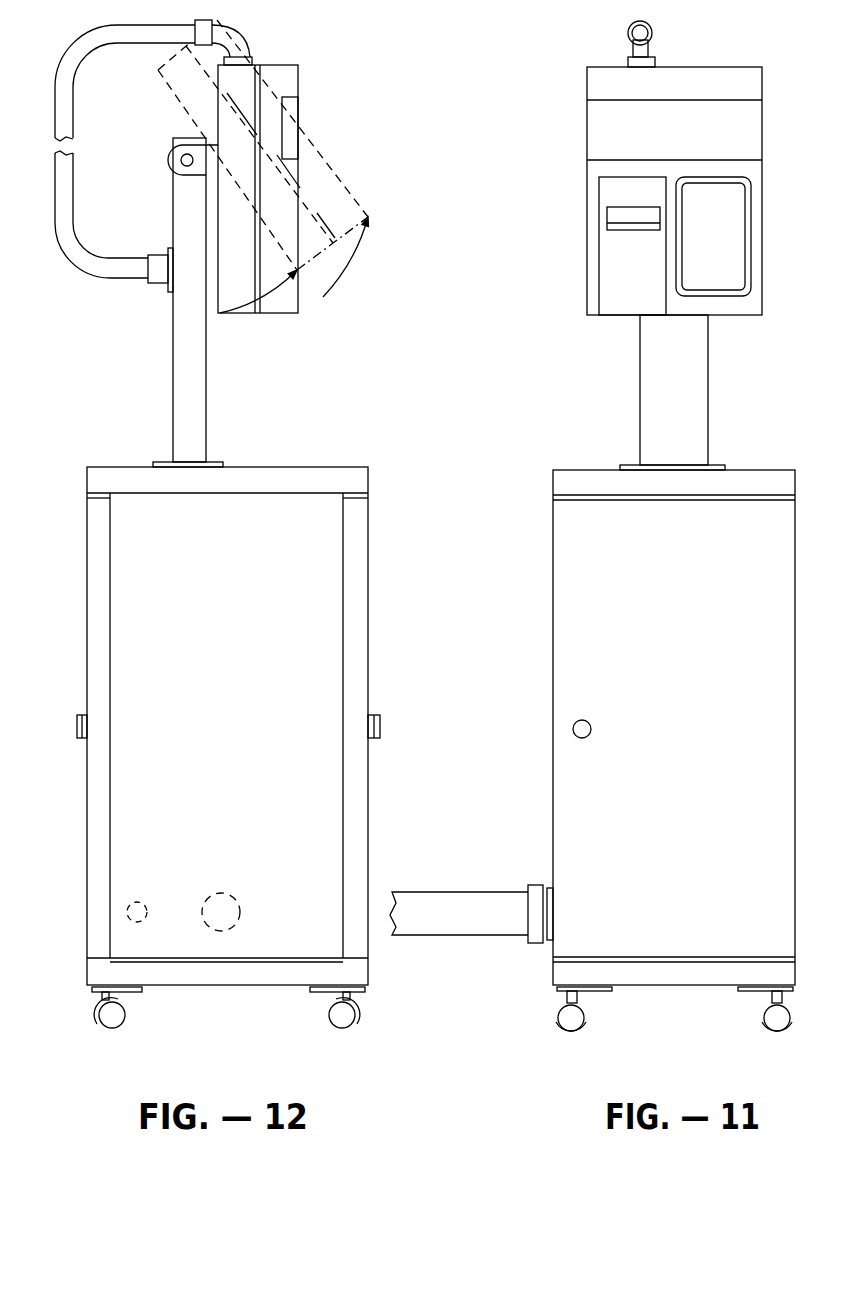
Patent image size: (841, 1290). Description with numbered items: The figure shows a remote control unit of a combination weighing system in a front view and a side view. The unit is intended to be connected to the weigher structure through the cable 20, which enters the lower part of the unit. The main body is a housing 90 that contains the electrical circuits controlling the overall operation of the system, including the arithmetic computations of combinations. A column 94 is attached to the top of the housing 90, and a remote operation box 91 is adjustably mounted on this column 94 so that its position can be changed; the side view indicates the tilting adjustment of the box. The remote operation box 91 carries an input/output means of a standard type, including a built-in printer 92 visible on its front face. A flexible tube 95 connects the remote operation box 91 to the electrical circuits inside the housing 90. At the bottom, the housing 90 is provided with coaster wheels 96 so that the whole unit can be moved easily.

In FIG. 11, the cable 20 is at (475, 897).
In FIG. 12, the housing 90 is at (358, 535).
In FIG. 11, the housing 90 is at (560, 627).
In FIG. 12, the remote operation box 91 is at (288, 75).
In FIG. 11, the remote operation box 91 is at (598, 140).
In FIG. 11, the built-in printer 92 is at (612, 257).
In FIG. 12, the column 94 is at (197, 371).
In FIG. 11, the column 94 is at (652, 388).
In FIG. 12, the flexible tube 95 is at (96, 263).
In FIG. 12, the coaster wheels 96 is at (117, 1013).
In FIG. 11, the coaster wheels 96 is at (585, 1020).